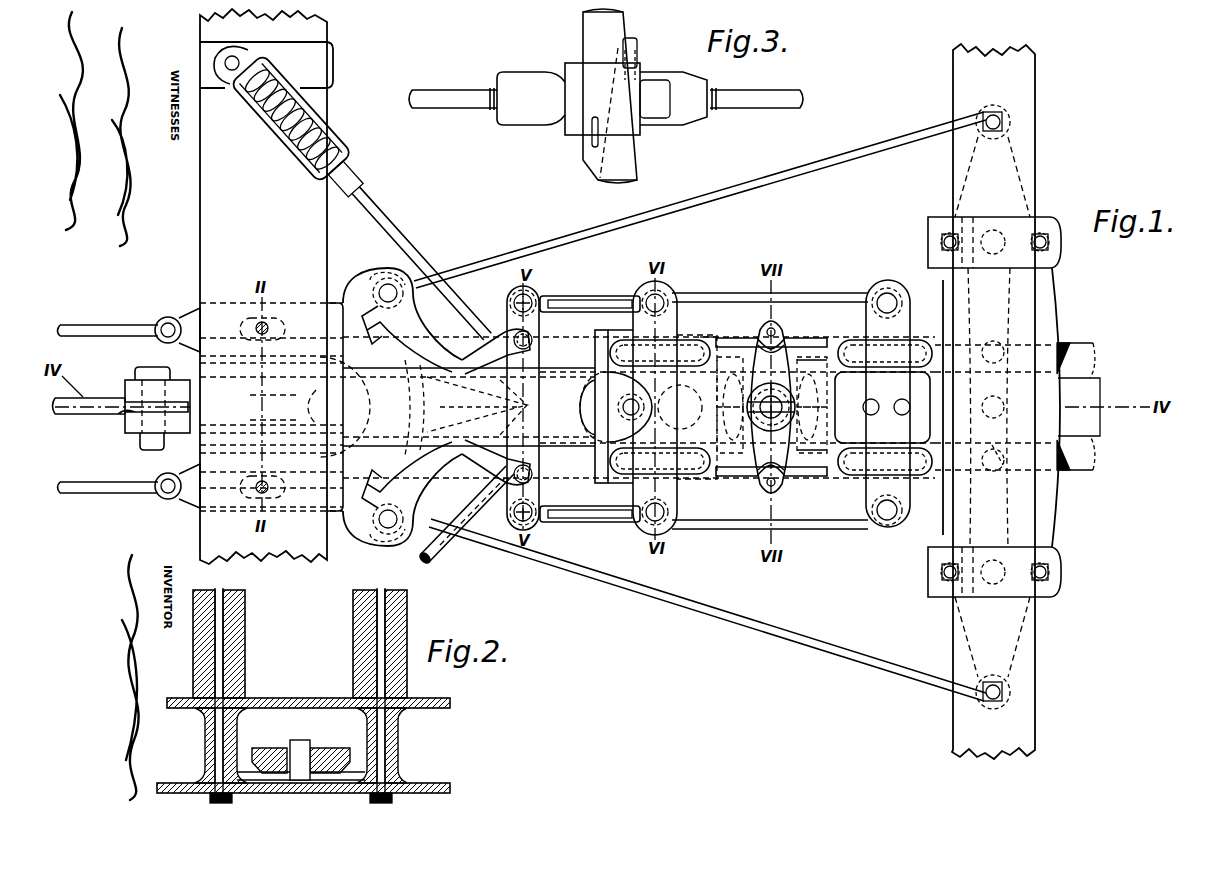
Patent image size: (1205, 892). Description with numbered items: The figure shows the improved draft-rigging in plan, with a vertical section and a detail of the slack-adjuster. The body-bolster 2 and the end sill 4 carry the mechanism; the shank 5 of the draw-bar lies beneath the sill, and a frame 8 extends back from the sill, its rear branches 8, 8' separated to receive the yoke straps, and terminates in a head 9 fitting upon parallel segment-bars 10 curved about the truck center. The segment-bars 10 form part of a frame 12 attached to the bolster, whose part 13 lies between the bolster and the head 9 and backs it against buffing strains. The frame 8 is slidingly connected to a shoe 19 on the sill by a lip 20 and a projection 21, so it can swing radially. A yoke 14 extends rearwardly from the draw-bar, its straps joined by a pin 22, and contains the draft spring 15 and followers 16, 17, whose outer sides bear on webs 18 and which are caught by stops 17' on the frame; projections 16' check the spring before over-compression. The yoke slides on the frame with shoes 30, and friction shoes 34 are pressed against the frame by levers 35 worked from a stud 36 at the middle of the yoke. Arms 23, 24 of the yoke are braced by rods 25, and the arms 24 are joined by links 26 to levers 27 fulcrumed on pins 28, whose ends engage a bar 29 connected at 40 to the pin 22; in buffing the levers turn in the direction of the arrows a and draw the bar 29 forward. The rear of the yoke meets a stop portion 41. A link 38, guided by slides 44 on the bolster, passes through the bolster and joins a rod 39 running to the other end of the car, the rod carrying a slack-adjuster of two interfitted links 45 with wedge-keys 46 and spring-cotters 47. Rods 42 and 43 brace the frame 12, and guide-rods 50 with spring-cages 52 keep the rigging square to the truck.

In FIG. 1, the body-bolster 2 is at (263, 286).
In FIG. 1, the end sill 4 is at (994, 401).
In FIG. 1, the shank of draw-bar 5 is at (945, 405).
In FIG. 1, the frame 8 is at (846, 422).
In FIG. 1, the branch of frame 8' is at (707, 306).
In FIG. 1, the head 9 is at (407, 407).
In FIG. 1, the segment-bars 10 is at (407, 407).
In FIG. 1, the frame 12 is at (399, 401).
In FIG. 1, the part of frame 13 is at (346, 407).
In FIG. 1, the yoke 14 is at (812, 478).
In FIG. 1, the draft spring 15 is at (766, 500).
In FIG. 1, the follower 16 is at (660, 424).
In FIG. 1, the projections 16' is at (778, 407).
In FIG. 1, the follower 17 is at (885, 407).
In FIG. 1, the stops 17' is at (786, 404).
In FIG. 1, the webs 18 is at (794, 407).
In FIG. 1, the shoe 19 is at (1048, 407).
In FIG. 1, the lip 20 is at (1078, 406).
In FIG. 1, the projection 21 is at (1005, 468).
In FIG. 1, the pin 22 is at (640, 402).
In FIG. 1, the arm 23 is at (903, 512).
In FIG. 1, the arm 24 is at (665, 409).
In FIG. 1, the rods 25 is at (745, 522).
In FIG. 1, the links 26 is at (584, 522).
In FIG. 1, the levers 27 is at (540, 468).
In FIG. 1, the pins 28 is at (505, 480).
In FIG. 1, the bar 29 is at (477, 406).
In FIG. 1, the slide plates or shoes 30 is at (852, 475).
In FIG. 1, the friction plates or shoes 34 is at (778, 480).
In FIG. 1, the levers 35 is at (768, 407).
In FIG. 1, the stud 36 is at (790, 400).
In FIG. 1, the link 38 is at (190, 426).
In FIG. 2, the link 38 is at (325, 776).
In FIG. 1, the rod 39 is at (85, 402).
In FIG. 2, the rod 39 is at (300, 742).
In FIG. 3, the rod 39 is at (768, 100).
In FIG. 1, the connection 40 is at (602, 410).
In FIG. 1, the stop portion 41 is at (595, 400).
In FIG. 1, the rods 42 is at (105, 484).
In FIG. 1, the rods 43 is at (716, 620).
In FIG. 1, the slides 44 is at (397, 407).
In FIG. 2, the slides 44 is at (340, 756).
In FIG. 3, the interfitted links 45 is at (684, 139).
In FIG. 3, the wedge-keys 46 is at (610, 96).
In FIG. 3, the spring-cotters 47 is at (592, 138).
In FIG. 1, the guide-rods 50 is at (483, 540).
In FIG. 1, the spring-cages 52 is at (336, 136).
In FIG. 1, the arrows a is at (512, 511).